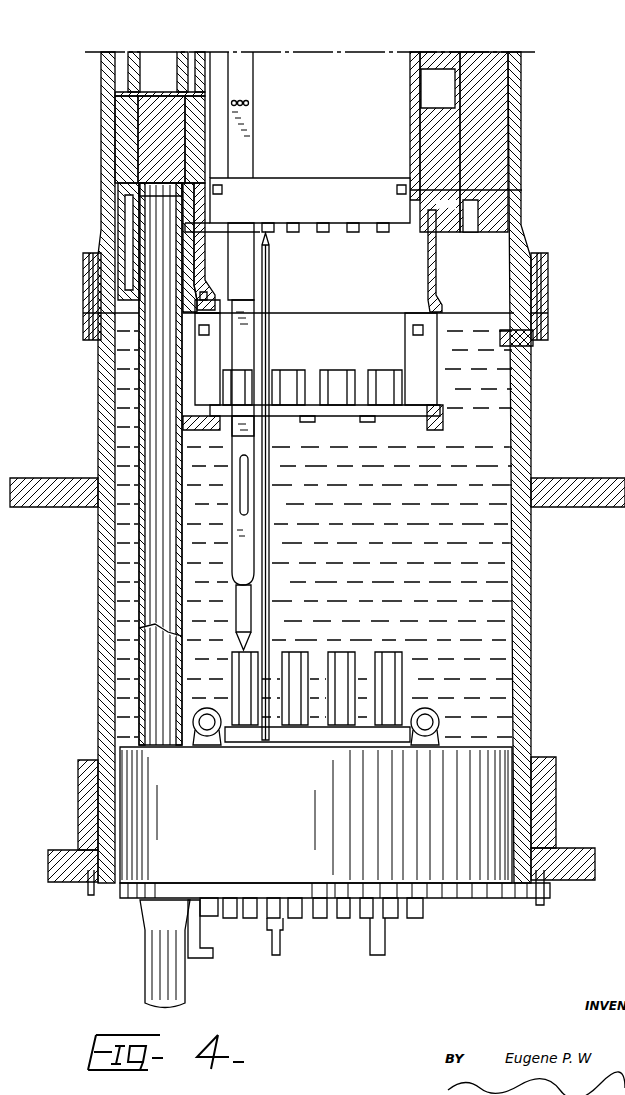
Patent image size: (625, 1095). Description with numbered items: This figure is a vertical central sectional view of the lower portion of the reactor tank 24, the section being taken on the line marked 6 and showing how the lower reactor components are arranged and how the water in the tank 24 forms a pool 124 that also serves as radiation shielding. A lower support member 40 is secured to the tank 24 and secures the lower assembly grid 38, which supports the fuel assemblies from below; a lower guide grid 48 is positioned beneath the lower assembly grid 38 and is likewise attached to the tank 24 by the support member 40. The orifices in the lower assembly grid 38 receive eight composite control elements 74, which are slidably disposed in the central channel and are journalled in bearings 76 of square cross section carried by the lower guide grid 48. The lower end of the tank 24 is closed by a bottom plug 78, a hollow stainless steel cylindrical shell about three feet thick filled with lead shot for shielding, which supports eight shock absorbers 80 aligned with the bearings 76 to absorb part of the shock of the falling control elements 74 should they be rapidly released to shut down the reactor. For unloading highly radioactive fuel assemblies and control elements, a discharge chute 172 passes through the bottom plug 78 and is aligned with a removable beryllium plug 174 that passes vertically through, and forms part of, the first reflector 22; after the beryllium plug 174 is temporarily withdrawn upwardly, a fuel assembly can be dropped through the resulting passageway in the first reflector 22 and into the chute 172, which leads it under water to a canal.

The section line 6- 6 is at (99, 167).
The first reflector 22 is at (470, 70).
The tank 24 is at (531, 585).
The lower assembly grid 38 is at (325, 204).
The lower support member 40 is at (436, 262).
The lower guide grid 48 is at (313, 416).
The composite control element 74 is at (237, 62).
The bearing 76 is at (305, 376).
The bottom plug 78 is at (307, 826).
The shock absorber 80 is at (380, 655).
The pool 124 is at (490, 643).
The discharge chute 172 is at (184, 656).
The removable beryllium plug 174 is at (140, 127).